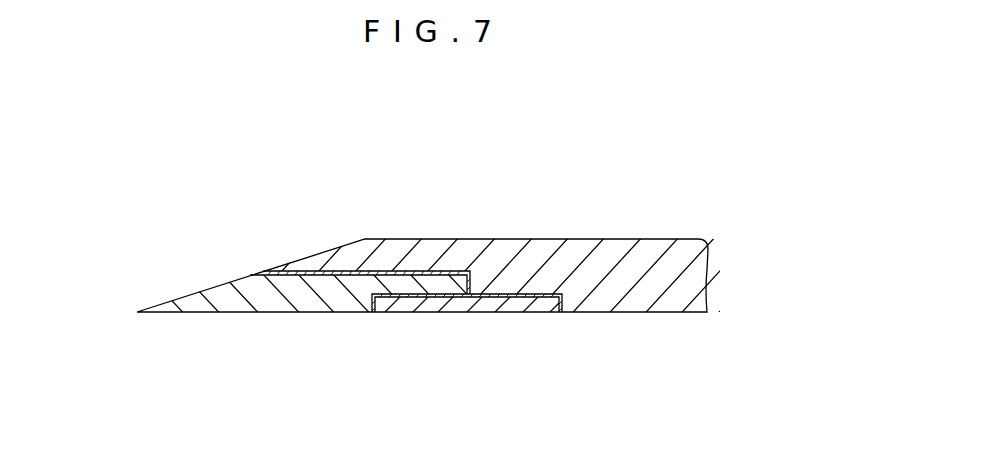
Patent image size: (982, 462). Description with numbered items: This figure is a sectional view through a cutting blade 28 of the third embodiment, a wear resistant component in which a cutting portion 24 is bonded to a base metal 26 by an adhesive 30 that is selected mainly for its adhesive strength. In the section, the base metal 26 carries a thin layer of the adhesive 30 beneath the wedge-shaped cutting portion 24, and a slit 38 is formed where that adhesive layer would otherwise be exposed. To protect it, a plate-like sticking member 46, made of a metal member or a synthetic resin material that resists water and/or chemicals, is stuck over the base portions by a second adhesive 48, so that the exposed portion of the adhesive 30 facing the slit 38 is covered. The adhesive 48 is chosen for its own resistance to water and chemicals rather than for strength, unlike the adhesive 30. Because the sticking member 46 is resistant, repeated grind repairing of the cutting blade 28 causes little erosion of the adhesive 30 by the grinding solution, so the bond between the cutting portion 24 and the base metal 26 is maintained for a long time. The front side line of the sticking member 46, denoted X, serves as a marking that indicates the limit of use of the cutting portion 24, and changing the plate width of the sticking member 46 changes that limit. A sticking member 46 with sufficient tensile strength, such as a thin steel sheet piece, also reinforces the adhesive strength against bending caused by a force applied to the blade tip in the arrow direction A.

The cutting portion 24 is at (266, 296).
The base metal 26 is at (636, 243).
The cutting blade 28 is at (633, 322).
The adhesive 30 is at (288, 265).
The slit 38 is at (472, 290).
The sticking member 46 is at (485, 300).
The adhesive 48 is at (520, 294).
The front side line of the sticking member X is at (373, 313).
The arrow direction A is at (205, 252).